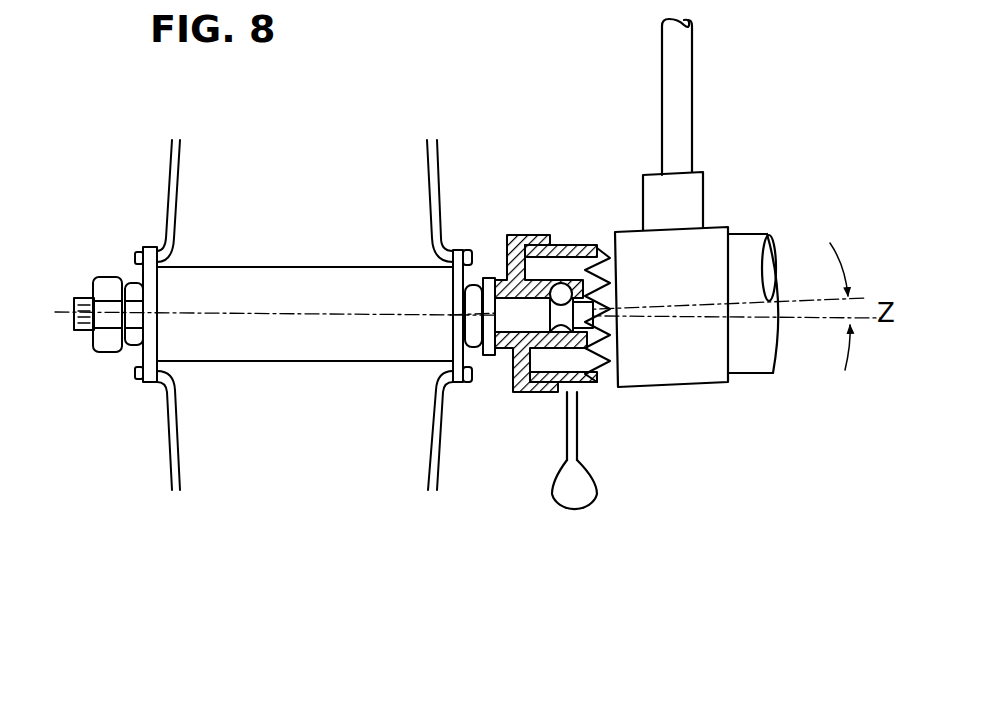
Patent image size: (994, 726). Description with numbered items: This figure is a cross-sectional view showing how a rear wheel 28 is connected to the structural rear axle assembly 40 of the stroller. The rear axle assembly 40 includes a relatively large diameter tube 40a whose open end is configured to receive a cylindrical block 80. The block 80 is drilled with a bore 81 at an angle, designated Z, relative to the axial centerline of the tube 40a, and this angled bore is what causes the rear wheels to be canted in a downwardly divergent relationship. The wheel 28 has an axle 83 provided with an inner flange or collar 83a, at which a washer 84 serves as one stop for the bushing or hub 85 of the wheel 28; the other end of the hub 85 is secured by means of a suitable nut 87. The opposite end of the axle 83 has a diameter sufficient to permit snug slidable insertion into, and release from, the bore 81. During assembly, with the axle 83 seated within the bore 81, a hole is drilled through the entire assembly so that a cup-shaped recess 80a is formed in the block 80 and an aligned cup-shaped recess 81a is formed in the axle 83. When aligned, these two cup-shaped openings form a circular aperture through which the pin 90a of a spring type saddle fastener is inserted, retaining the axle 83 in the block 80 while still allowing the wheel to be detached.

The rear wheel 28 is at (137, 160).
The rear axle assembly 40 is at (756, 166).
The tube 40a is at (760, 374).
The block 80 is at (540, 393).
The cup-shaped recess 80a is at (580, 252).
The bore 81 is at (530, 237).
The cup-shaped recess 81a is at (576, 350).
The axle 83 is at (78, 330).
The inner flange or collar 83a is at (475, 350).
The washer 84 is at (489, 278).
The bushing or hub 85 is at (362, 267).
The nut 87 is at (110, 277).
The pin 90a is at (561, 283).